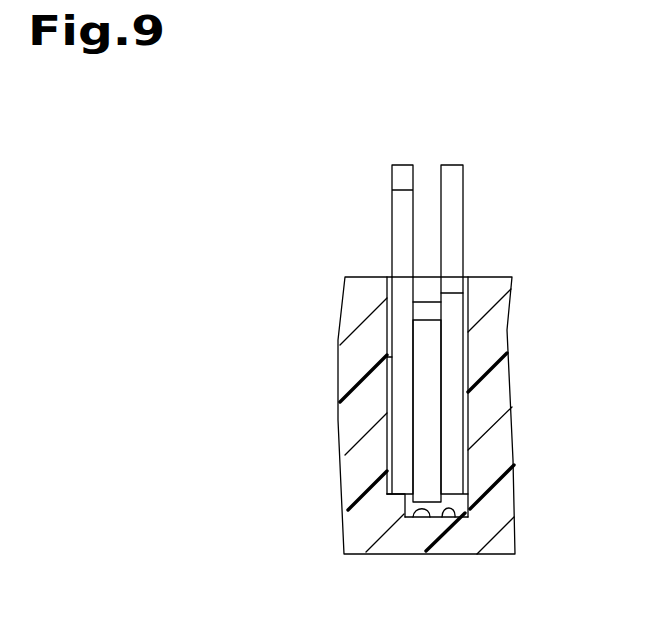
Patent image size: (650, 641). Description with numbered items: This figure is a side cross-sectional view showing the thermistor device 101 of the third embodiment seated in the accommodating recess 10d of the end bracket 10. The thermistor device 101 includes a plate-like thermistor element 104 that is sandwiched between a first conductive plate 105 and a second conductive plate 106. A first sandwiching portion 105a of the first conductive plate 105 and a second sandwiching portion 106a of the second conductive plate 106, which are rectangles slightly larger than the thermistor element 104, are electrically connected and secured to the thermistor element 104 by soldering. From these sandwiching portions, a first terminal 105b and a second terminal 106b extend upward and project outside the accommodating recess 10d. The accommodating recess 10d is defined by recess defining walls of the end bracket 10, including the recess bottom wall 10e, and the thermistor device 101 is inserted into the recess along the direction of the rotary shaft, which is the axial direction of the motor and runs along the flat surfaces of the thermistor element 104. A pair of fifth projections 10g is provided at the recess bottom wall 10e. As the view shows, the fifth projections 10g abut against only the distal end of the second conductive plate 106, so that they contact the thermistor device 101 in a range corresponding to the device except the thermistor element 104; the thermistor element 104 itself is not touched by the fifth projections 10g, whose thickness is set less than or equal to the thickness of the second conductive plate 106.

The end bracket 10 is at (497, 278).
The accommodating recess 10d is at (446, 517).
The recess bottom wall 10e is at (414, 517).
The fifth projections 10g is at (388, 478).
The thermistor device 101 is at (426, 328).
The thermistor element 104 is at (440, 398).
The first conductive plate 105 is at (453, 430).
The first sandwiching portion 105a is at (453, 352).
The first terminal 105b is at (465, 211).
The second conductive plate 106 is at (402, 430).
The second sandwiching portion 106a is at (398, 385).
The second terminal 106b is at (392, 217).